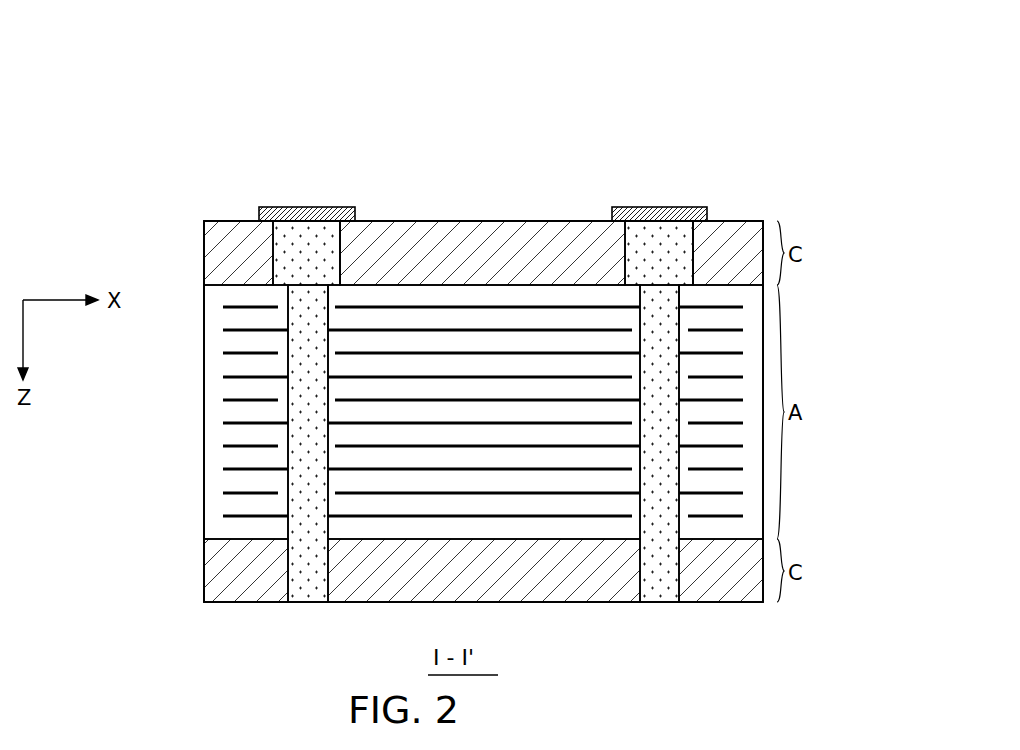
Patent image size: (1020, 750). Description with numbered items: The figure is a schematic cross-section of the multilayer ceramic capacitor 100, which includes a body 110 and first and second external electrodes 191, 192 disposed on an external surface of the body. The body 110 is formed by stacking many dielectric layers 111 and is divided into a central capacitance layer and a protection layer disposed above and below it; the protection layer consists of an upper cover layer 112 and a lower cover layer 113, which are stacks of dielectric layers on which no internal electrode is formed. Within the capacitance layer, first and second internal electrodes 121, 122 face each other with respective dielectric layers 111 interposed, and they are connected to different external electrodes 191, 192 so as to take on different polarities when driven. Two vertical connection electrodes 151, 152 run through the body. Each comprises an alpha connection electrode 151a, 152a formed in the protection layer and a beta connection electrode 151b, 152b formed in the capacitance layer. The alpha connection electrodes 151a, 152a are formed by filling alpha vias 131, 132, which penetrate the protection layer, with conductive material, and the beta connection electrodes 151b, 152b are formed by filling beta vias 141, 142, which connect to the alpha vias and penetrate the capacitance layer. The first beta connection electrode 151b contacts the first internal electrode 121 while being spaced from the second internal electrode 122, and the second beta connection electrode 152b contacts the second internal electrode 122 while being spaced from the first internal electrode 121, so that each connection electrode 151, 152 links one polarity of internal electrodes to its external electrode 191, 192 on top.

The multilayer ceramic capacitor 100 is at (214, 41).
The body 110 is at (478, 219).
The dielectric layer 111 is at (237, 459).
The upper cover layer 112 is at (213, 262).
The lower cover layer 113 is at (217, 573).
The first internal electrode 121 is at (227, 518).
The second internal electrode 122 is at (230, 494).
The alpha via 131 is at (342, 247).
The alpha via 132 is at (693, 248).
The beta via 141 is at (337, 318).
The beta via 142 is at (690, 318).
The connection electrode 151 is at (207, 378).
The first alpha connection electrode 151a is at (308, 308).
The first beta connection electrode 151b is at (300, 252).
The connection electrode 152 is at (602, 352).
The second alpha connection electrode 152a is at (647, 247).
The second beta connection electrode 152b is at (657, 380).
The first external electrode 191 is at (305, 206).
The second external electrode 192 is at (658, 206).